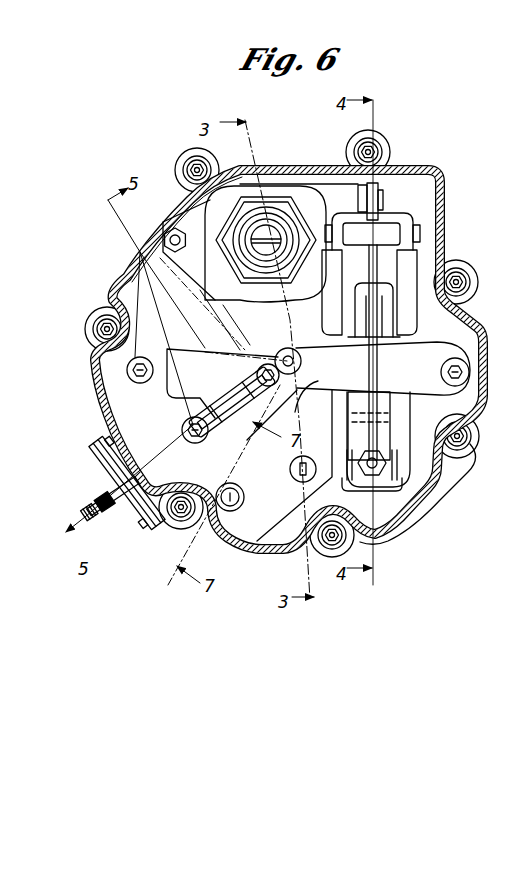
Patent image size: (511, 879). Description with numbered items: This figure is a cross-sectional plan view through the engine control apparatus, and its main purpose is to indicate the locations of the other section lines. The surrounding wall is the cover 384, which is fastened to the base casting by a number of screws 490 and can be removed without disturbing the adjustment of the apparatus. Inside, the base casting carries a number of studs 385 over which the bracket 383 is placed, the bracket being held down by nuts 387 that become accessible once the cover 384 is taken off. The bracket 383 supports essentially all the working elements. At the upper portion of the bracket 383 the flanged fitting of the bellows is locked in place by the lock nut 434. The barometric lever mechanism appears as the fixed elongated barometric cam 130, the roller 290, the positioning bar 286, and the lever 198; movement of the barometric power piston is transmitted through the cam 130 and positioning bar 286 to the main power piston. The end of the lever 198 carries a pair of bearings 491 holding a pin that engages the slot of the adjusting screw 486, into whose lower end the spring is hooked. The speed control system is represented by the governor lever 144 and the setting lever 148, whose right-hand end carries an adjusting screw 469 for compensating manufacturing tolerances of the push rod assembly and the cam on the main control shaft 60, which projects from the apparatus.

The main control shaft 60 is at (100, 515).
The fixed elongated barometric cam 130 is at (392, 306).
The governor lever 144 is at (322, 400).
The setting lever 148 is at (210, 424).
The lever 198 is at (386, 452).
The positioning bar 286 is at (402, 335).
The roller 290 is at (382, 222).
The bracket 383 is at (287, 469).
The cover 384 is at (418, 482).
The studs 385 is at (162, 235).
The nuts 387 is at (150, 243).
The lock nut 434 is at (292, 277).
The adjusting screw 469 is at (198, 443).
The adjusting screw 486 is at (388, 468).
The screws 490 is at (92, 333).
The bearings 491 is at (380, 480).